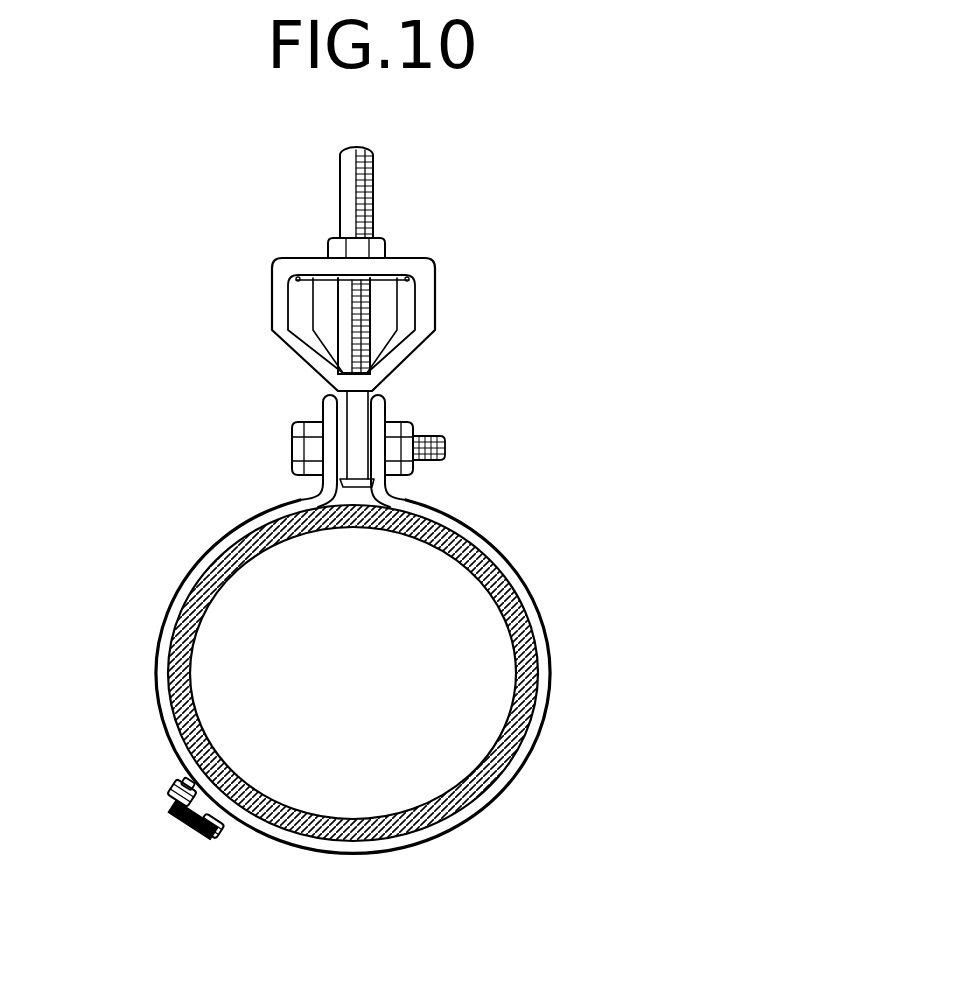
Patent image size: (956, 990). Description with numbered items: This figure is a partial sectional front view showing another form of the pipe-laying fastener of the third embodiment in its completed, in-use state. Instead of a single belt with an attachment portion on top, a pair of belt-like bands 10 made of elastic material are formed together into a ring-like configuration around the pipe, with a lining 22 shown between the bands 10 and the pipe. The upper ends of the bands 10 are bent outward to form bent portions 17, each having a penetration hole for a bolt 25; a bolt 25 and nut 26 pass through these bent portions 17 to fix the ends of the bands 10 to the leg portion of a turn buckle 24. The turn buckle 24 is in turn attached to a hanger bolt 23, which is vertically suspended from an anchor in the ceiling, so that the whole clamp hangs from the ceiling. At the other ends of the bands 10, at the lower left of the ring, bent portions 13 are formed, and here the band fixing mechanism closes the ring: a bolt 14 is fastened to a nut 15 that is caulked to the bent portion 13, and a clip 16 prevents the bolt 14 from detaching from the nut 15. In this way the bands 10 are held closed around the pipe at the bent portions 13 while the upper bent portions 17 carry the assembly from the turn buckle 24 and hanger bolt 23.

The band 10 is at (185, 588).
The bent portion 13 is at (192, 838).
The bolt 14 is at (213, 835).
The nut 15 is at (168, 812).
The clip 16 is at (183, 823).
The bent portion 17 is at (330, 413).
The elastic sleeve / liner 22 is at (522, 743).
The hanger bolt 23 is at (373, 192).
The turn buckle 24 is at (423, 321).
The bolt 25 is at (305, 460).
The nut 26 is at (405, 467).